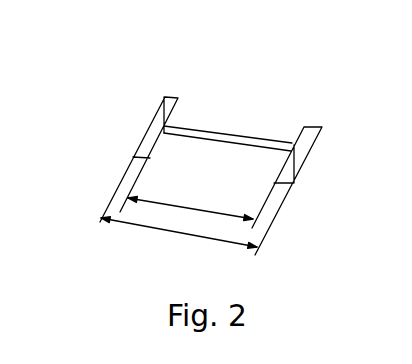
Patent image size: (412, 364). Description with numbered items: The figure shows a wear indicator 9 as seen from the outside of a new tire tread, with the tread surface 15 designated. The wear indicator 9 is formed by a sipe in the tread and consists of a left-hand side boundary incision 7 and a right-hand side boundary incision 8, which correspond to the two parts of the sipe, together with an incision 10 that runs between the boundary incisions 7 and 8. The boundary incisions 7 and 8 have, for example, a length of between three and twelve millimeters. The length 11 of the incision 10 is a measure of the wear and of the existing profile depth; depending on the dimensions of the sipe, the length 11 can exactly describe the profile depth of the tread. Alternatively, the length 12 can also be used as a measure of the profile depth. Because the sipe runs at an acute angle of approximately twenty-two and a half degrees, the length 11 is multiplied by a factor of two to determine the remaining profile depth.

The left-hand side boundary incision 7 is at (153, 131).
The right-hand side boundary incision 8 is at (243, 148).
The wear indicator 9 is at (255, 100).
The incision 10 is at (273, 140).
The length 11 is at (190, 205).
The length 12 is at (179, 231).
The tread surface 15 is at (199, 113).